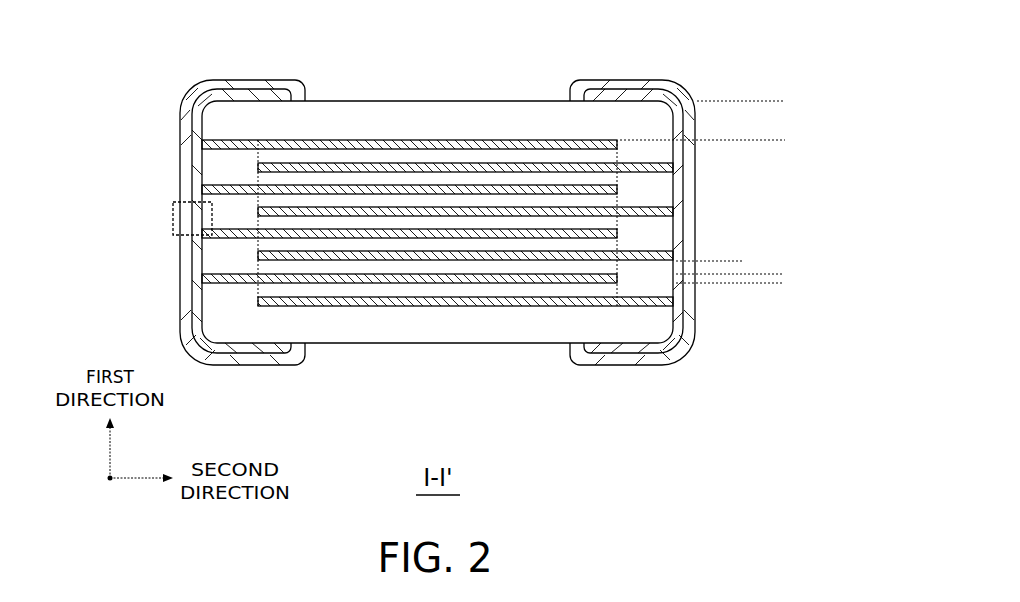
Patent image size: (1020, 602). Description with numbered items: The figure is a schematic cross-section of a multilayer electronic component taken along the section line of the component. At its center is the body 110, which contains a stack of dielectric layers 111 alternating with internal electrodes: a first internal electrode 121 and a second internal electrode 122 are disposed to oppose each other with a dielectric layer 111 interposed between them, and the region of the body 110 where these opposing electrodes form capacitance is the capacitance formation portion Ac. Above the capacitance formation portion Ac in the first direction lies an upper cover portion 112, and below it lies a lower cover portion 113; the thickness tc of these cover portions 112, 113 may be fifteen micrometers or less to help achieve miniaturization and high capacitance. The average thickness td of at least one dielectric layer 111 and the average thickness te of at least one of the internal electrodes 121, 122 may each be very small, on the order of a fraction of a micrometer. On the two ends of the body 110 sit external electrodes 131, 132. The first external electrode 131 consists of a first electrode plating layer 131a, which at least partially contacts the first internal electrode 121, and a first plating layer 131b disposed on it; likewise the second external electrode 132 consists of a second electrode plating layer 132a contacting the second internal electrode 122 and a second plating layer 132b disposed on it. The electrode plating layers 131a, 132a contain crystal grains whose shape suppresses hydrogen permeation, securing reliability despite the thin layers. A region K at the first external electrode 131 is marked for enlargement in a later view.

The body 110 is at (379, 101).
The dielectric layer 111 is at (322, 157).
The upper cover portion 112 is at (434, 118).
The lower cover portion 113 is at (437, 325).
The first internal electrode 121 is at (492, 143).
The second internal electrode 122 is at (555, 165).
The first external electrode 131 is at (168, 222).
The first electrode plating layer 131a is at (195, 161).
The first plating layer 131b is at (185, 190).
The second external electrode 132 is at (704, 222).
The second electrode plating layer 132a is at (690, 172).
The second plating layer 132b is at (697, 202).
The capacitance formation portion Ac is at (508, 305).
The region K is at (174, 218).
The thickness of the cover portions tc is at (780, 101).
The average thickness of the dielectric layer td is at (734, 249).
The average thickness of the internal electrodes te is at (776, 263).